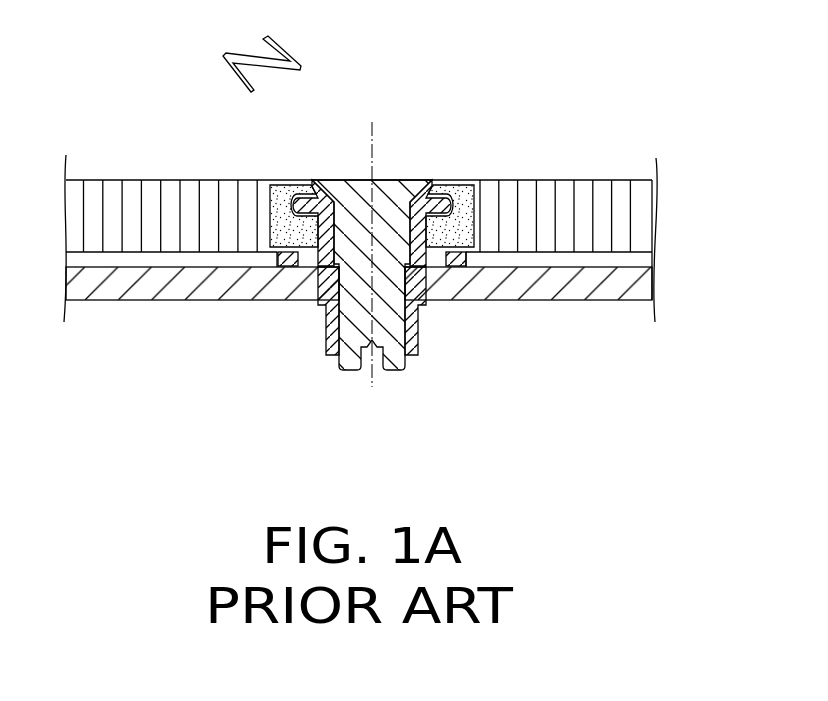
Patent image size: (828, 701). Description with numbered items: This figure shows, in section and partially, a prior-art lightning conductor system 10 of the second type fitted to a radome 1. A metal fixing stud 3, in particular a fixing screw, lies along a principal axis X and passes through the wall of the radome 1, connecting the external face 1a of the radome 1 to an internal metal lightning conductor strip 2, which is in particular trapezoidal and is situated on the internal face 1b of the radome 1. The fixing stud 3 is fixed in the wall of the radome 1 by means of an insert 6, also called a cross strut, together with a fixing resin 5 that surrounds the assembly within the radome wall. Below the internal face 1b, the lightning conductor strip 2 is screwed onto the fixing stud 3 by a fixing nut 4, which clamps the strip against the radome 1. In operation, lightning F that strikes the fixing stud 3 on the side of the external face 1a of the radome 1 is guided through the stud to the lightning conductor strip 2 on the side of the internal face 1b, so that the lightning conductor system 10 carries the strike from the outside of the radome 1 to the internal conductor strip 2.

The radome 1 is at (597, 200).
The external face of the radome 1a is at (528, 178).
The internal face of the radome 1b is at (641, 256).
The lightning conductor strip 2 is at (558, 283).
The fixing stud 3 is at (344, 368).
The fixing nut 4 is at (416, 344).
The fixing resin 5 is at (466, 192).
The insert 6 is at (311, 194).
The lightning conductor system 10 is at (165, 147).
The principal axis X is at (367, 135).
The lightning F is at (288, 55).